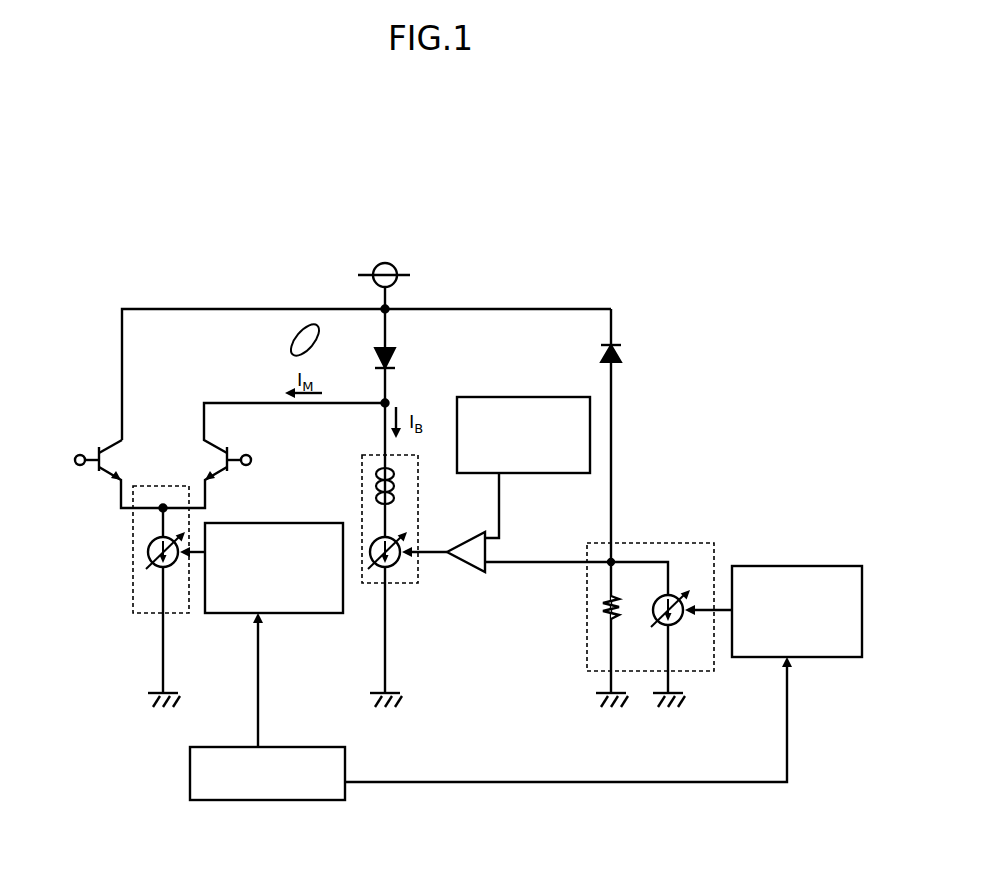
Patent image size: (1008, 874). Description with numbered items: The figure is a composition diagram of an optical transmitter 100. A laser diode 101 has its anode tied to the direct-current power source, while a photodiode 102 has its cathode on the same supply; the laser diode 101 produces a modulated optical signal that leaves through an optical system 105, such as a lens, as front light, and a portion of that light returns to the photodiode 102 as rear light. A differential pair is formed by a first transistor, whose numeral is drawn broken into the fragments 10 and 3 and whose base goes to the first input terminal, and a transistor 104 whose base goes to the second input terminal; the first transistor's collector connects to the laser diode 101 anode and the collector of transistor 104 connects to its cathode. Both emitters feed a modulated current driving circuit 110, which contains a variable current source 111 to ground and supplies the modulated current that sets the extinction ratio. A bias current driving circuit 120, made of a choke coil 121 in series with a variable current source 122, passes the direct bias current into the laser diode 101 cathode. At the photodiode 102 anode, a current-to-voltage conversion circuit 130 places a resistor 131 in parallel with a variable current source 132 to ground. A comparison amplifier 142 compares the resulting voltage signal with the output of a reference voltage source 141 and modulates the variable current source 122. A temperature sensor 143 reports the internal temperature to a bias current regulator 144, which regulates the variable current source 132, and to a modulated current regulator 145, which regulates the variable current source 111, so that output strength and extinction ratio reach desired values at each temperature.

The optical transmitter 100 is at (194, 279).
The differential transistor 10 is at (131, 457).
The base terminal 3 is at (101, 460).
The transistor 104 is at (216, 447).
The optical system 105 is at (297, 341).
The laser diode 101 is at (394, 356).
The photodiode 102 is at (622, 353).
The modulated current driving circuit 110 is at (133, 540).
The variable current source 111 is at (150, 561).
The bias current driving circuit 120 is at (418, 497).
The choke coil 121 is at (377, 490).
The variable current source 122 is at (392, 569).
The current-to-voltage conversion circuit 130 is at (640, 543).
The resistor 131 is at (604, 618).
The variable current source 132 is at (677, 592).
The reference voltage source 141 is at (513, 397).
The comparison amplifier 142 is at (470, 572).
The temperature sensor 143 is at (289, 801).
The bias current regulator 144 is at (806, 556).
The modulated current regulator 145 is at (294, 523).